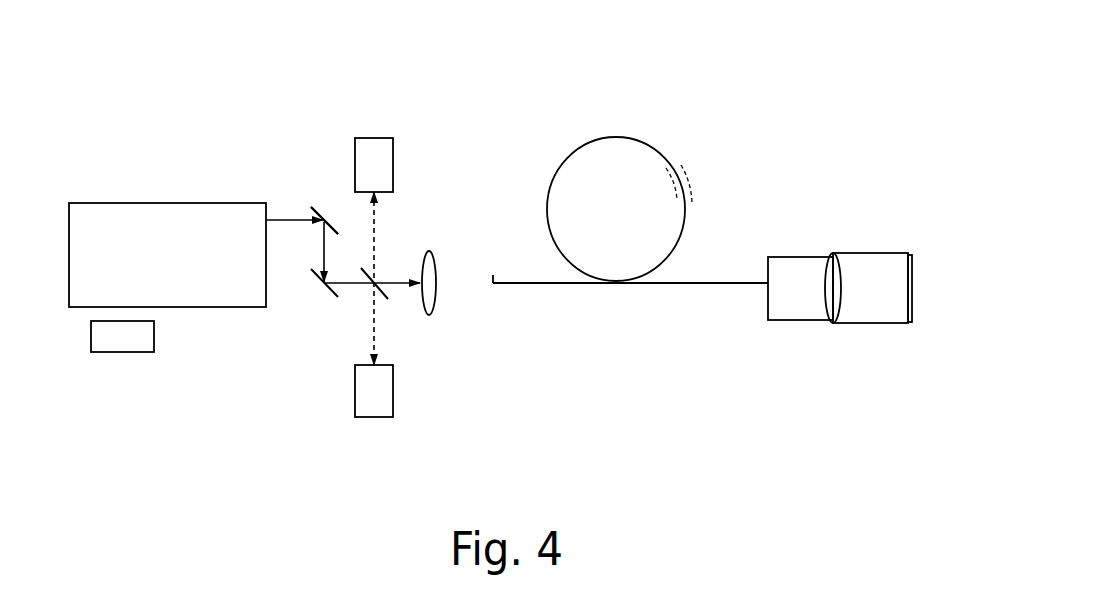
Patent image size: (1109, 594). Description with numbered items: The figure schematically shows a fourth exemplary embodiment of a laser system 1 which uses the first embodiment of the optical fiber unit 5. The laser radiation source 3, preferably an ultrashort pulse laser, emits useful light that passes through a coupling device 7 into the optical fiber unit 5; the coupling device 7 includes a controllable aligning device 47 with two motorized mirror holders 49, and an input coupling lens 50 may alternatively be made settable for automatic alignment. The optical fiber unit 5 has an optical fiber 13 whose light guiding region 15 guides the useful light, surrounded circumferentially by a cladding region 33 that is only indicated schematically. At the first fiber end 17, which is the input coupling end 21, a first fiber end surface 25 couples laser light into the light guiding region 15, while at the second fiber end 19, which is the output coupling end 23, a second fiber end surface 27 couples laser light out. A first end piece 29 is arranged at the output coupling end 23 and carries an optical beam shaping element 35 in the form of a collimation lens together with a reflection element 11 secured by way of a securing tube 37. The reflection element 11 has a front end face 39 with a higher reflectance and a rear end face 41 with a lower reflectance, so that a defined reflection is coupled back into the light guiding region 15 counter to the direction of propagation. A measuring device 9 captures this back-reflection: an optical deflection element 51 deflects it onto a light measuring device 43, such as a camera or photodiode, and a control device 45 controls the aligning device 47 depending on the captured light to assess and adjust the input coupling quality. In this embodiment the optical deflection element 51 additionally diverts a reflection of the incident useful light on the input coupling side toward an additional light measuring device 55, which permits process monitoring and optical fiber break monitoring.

The laser system 1 is at (553, 85).
The laser radiation source 3 is at (170, 203).
The optical fiber unit 5 is at (658, 85).
The coupling device 7 is at (397, 318).
The measuring device 9 is at (412, 143).
The reflection element 11 is at (907, 252).
The optical fiber 13 is at (643, 142).
The light guiding region 15 is at (643, 285).
The first fiber end 17 is at (630, 333).
The input coupling end 21 is at (522, 297).
The second fiber end 19 is at (750, 385).
The output coupling end 23 is at (783, 342).
The first fiber end surface 25 is at (493, 280).
The second fiber end surface 27 is at (777, 283).
The first end piece 29 is at (836, 228).
The cladding region 33 is at (683, 172).
The optical beam shaping element 35 is at (837, 317).
The securing tube 37 is at (863, 250).
The front end face 39 is at (898, 280).
The rear end face 41 is at (913, 298).
The light measuring device 43 is at (375, 138).
The control device 45 is at (120, 352).
The aligning device 47 is at (316, 190).
The motorized mirror holder 49 is at (324, 217).
The input coupling lens 50 is at (430, 300).
The optical deflection element 51 is at (378, 300).
The additional light measuring device 55 is at (355, 400).